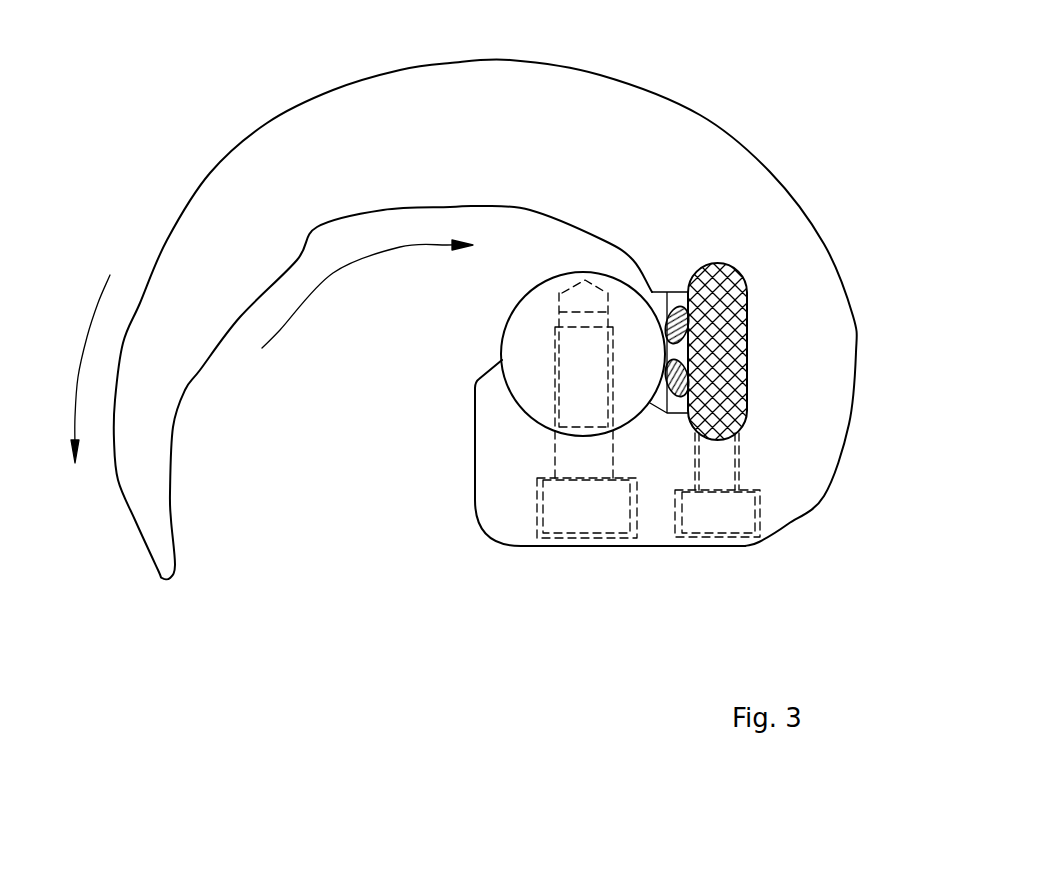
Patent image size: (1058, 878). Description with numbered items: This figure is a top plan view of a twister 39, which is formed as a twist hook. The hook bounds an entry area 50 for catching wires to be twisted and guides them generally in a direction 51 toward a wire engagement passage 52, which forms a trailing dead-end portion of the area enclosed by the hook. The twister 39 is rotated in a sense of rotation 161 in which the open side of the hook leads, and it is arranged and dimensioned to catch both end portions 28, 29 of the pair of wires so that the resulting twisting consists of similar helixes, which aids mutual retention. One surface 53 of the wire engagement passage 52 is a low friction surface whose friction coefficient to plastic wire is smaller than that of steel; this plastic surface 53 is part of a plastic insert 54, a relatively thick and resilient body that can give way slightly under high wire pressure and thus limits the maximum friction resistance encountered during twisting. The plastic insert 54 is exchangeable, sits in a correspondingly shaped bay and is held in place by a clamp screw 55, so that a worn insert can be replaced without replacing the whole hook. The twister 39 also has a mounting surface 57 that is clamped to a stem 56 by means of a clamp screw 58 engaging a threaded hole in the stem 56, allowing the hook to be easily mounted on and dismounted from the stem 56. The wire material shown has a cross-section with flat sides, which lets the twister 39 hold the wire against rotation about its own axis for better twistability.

The twister 39 is at (268, 110).
The sense of rotation 161 is at (98, 302).
The direction 51 is at (297, 313).
The entry area 50 is at (349, 461).
The stem 56 is at (502, 330).
The mounting surface 57 is at (517, 400).
The end portion 28 is at (651, 292).
The end portion 29 is at (653, 410).
The wire engagement passage 52 is at (680, 352).
The low friction surface 53 is at (678, 320).
The plastic insert 54 is at (678, 385).
The clamp screw 58 is at (586, 515).
The clamp screw 55 is at (718, 515).